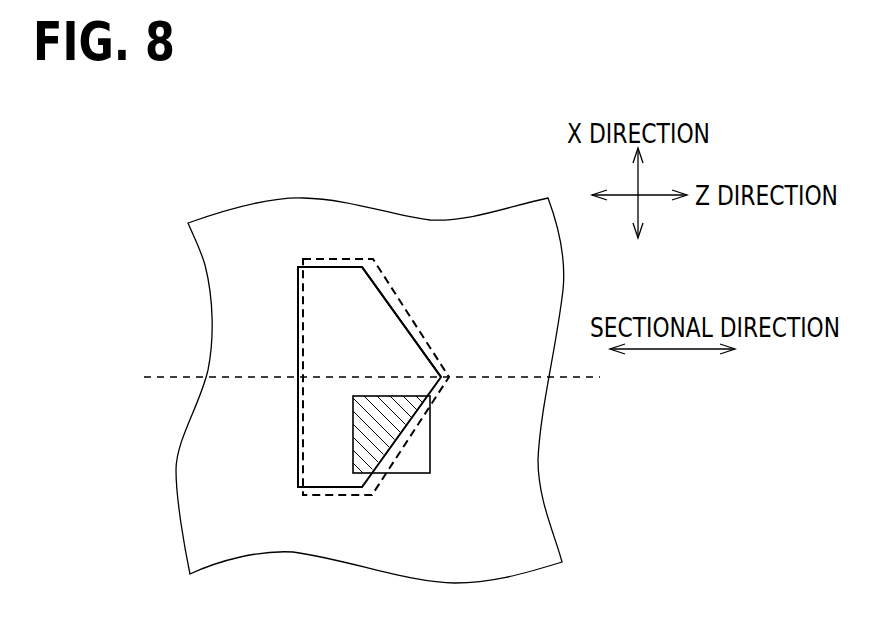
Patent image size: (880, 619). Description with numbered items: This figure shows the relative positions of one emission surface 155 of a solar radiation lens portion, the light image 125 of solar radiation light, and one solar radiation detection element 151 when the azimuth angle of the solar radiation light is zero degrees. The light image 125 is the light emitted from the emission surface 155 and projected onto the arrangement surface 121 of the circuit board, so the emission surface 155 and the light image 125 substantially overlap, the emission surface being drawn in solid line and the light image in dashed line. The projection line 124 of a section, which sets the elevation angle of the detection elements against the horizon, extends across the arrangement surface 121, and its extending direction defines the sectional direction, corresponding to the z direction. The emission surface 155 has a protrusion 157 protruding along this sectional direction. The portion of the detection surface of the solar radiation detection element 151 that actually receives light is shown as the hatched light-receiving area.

The arrangement surface 121 is at (540, 550).
The projection line 124 is at (583, 379).
The light image 125 is at (373, 264).
The solar radiation detection element 151 is at (430, 450).
The emission surface 155 is at (390, 280).
The protrusion 157 is at (437, 363).